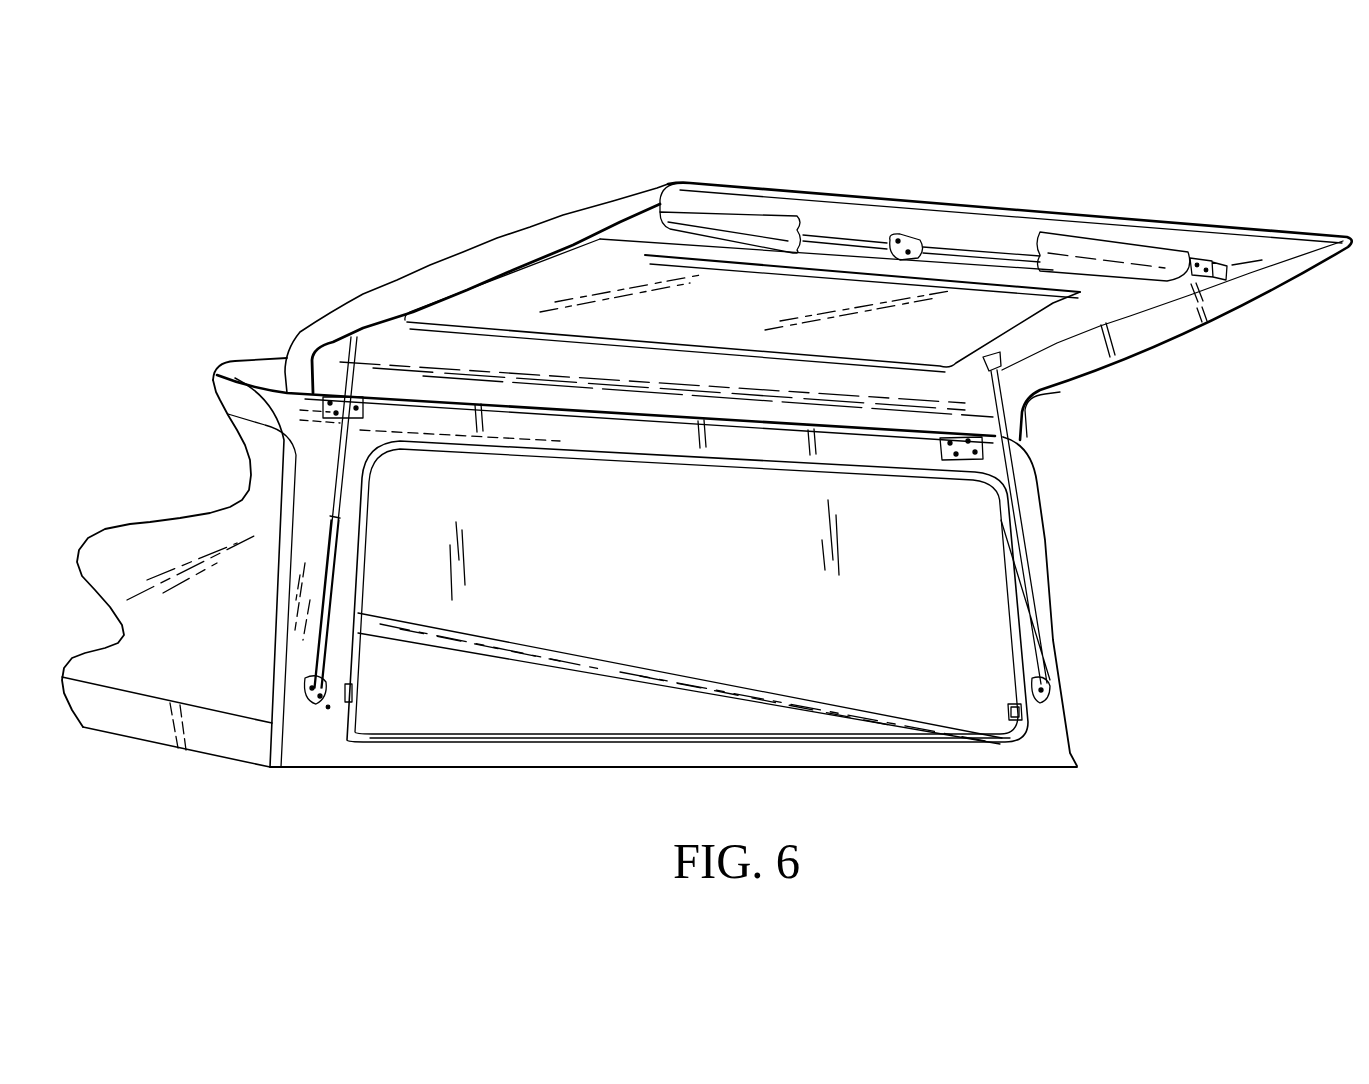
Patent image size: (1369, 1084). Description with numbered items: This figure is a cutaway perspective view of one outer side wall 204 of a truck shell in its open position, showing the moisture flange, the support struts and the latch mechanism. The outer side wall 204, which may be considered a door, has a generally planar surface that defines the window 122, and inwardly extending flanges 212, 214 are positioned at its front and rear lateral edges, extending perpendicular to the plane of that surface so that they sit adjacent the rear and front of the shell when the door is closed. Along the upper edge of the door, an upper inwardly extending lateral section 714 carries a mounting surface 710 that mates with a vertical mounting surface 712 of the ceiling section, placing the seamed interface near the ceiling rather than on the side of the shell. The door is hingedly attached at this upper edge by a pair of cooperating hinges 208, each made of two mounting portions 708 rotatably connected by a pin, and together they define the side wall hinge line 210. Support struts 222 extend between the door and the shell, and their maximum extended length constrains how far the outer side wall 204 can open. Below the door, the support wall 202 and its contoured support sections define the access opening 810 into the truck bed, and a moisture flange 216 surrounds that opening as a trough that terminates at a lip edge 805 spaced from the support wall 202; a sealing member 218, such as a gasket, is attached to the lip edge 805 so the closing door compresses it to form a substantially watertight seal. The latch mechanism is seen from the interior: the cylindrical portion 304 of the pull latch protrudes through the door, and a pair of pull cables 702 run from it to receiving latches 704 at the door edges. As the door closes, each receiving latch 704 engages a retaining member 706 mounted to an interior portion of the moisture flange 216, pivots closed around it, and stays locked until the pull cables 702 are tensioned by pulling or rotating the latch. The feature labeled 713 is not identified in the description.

The window 122 is at (600, 267).
The support wall 202 is at (310, 497).
The outer side wall 204 is at (1083, 230).
The hinges 208 is at (257, 367).
The side wall hinge line 210 is at (853, 463).
The inwardly extending flange 212 is at (1260, 283).
The inwardly extending flange 214 is at (500, 257).
The moisture flange 216 is at (377, 463).
The sealing member 218 is at (377, 493).
The support struts 222 is at (1040, 415).
The cylindrical portion 304 is at (907, 230).
The pull cables 702 is at (837, 237).
The receiving latch 704 is at (1223, 256).
The retaining member 706 is at (1000, 710).
The mounting portions 708 is at (993, 443).
The mounting surface 710 is at (417, 403).
The vertical mounting surface 712 is at (570, 430).
The front face 713 is at (663, 387).
The upper inwardly extending lateral section 714 is at (933, 437).
The lip edge 805 is at (512, 745).
The access opening 810 is at (666, 616).